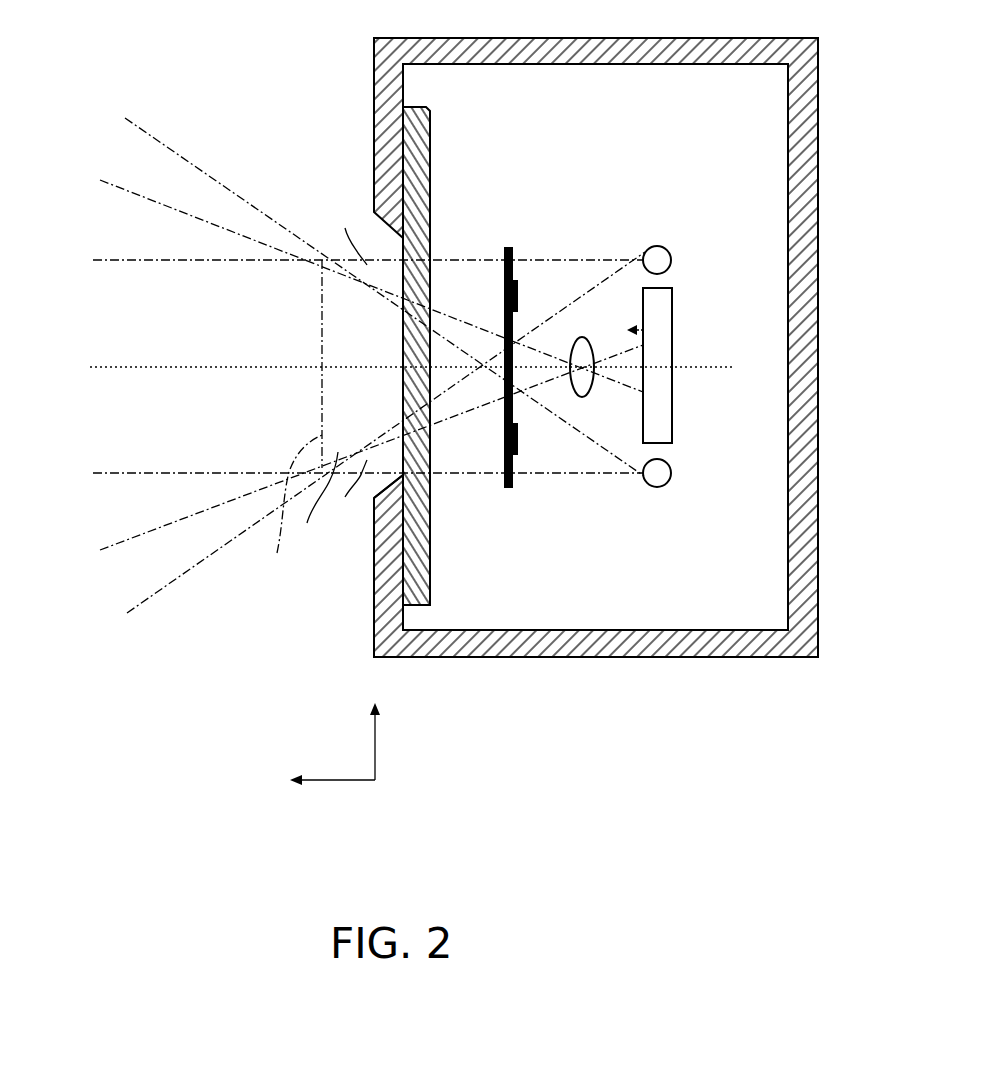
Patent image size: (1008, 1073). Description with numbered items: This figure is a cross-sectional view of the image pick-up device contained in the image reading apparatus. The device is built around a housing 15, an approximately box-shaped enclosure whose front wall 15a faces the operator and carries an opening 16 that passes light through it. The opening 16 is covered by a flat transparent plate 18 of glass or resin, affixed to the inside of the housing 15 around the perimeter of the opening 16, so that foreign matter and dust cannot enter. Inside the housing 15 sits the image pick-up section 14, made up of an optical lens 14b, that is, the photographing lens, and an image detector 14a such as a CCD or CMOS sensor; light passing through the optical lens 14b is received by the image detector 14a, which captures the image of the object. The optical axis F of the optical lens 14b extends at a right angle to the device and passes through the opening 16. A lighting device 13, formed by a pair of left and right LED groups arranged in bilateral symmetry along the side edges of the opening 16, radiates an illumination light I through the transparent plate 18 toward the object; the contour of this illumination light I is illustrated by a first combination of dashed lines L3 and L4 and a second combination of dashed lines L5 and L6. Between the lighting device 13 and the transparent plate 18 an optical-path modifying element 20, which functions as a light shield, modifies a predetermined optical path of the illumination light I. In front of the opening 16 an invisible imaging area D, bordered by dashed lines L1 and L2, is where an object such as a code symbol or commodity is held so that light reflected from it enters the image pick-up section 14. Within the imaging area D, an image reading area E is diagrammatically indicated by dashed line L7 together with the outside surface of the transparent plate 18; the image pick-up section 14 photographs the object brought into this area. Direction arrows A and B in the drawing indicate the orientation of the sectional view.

The housing 15 is at (818, 78).
The front wall 15a is at (373, 78).
The transparent plate 18 is at (430, 138).
The opening 16 is at (380, 475).
The optical-path modifying element 20 is at (513, 489).
The lighting device 13 is at (672, 260).
The image pick-up section 14 is at (660, 330).
The image detector 14a is at (660, 313).
The optical lens 14b is at (582, 337).
The dashed line L1 is at (128, 542).
The dashed line L2 is at (128, 191).
The dashed line L3 is at (123, 478).
The dashed line L4 is at (150, 135).
The dashed line L5 is at (123, 263).
The dashed line L6 is at (152, 597).
The dashed line L7 is at (286, 514).
The optical axis F is at (122, 370).
The imaging area D is at (122, 427).
The image reading area E is at (317, 506).
The illumination light I is at (353, 368).
The direction A is at (373, 731).
The direction B is at (319, 783).